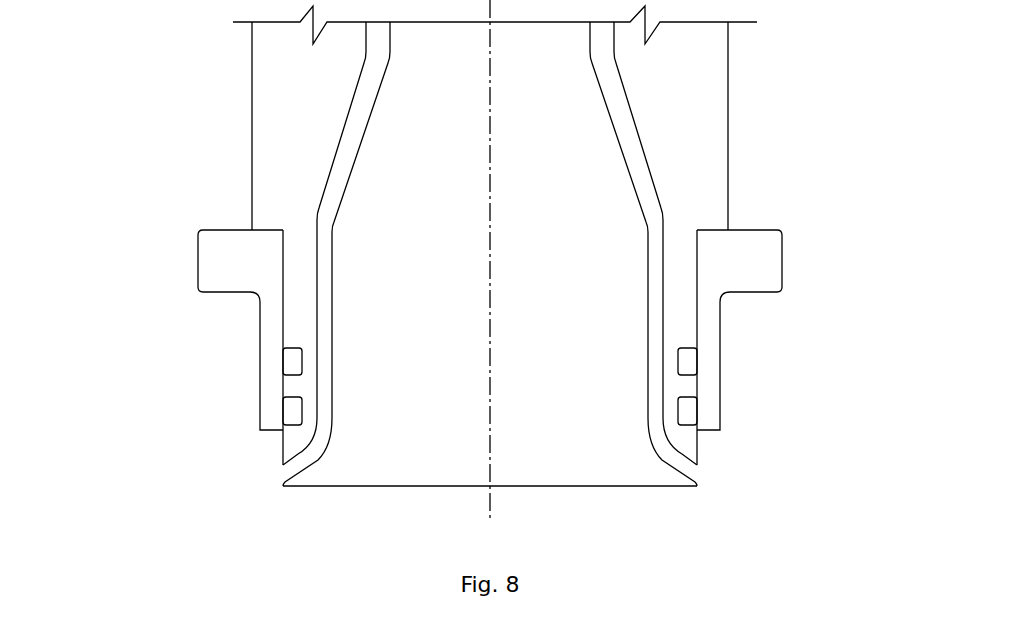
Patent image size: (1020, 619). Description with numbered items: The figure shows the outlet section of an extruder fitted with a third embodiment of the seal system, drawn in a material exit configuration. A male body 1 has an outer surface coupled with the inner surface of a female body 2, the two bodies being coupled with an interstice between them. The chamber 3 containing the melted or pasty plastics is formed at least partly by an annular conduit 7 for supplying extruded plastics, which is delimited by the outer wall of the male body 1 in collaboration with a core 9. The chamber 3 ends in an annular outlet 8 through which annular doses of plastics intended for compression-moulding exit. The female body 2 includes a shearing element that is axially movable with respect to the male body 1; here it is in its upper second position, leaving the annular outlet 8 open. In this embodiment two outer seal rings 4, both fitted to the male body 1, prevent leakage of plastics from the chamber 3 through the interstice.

The male body 1 is at (683, 283).
The female body 2 is at (215, 260).
The chamber 3 is at (308, 450).
The seal ring 4 is at (288, 411).
The annular conduit 7 is at (350, 133).
The annular outlet 8 is at (282, 472).
The core 9 is at (553, 470).